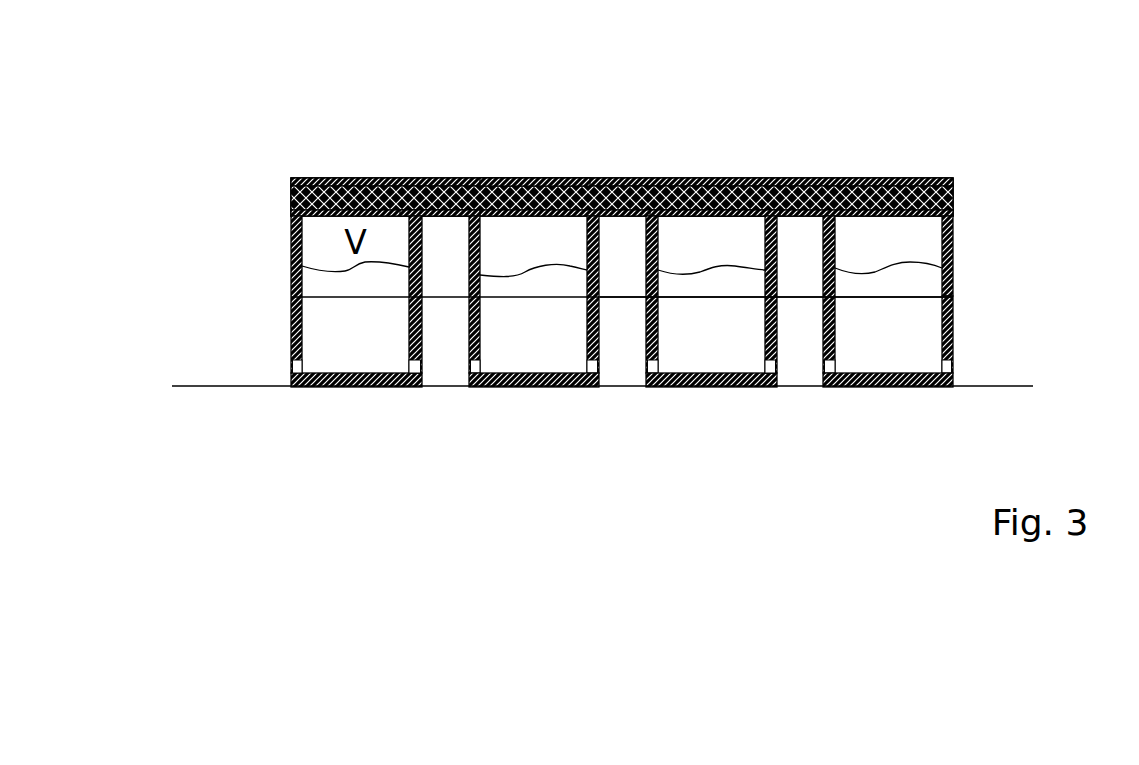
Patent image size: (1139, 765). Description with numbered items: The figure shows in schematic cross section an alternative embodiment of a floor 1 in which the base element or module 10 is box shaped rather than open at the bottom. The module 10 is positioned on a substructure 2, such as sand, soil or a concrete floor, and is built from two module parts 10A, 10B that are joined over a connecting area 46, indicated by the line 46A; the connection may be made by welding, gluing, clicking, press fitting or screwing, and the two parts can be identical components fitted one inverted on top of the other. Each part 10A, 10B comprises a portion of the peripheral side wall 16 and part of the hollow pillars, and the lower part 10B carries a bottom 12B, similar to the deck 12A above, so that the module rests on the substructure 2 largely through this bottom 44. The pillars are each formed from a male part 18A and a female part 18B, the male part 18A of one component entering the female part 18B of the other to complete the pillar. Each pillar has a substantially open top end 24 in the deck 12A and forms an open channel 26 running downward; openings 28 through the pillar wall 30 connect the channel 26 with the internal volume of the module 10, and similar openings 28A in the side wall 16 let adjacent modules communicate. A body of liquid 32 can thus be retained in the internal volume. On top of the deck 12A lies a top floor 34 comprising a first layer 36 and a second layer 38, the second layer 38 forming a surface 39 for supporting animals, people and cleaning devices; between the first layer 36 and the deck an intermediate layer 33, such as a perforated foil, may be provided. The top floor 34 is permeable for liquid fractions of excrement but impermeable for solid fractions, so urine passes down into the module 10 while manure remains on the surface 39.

The floor 1 is at (248, 140).
The substructure 2 is at (995, 387).
The module 10 is at (272, 320).
The upper module part 10A is at (958, 245).
The lower module part 10B is at (958, 342).
The deck 12A is at (705, 212).
The bottom 12B is at (687, 387).
The side wall 16 is at (291, 250).
The male pillar part 18A is at (793, 270).
The female pillar part 18B is at (452, 365).
The open top end 24 is at (439, 218).
The channel 26 is at (616, 353).
The opening 28 is at (417, 366).
The opening in side wall 28A is at (293, 370).
The pillar wall 30 is at (830, 358).
The body of liquid 32 is at (322, 330).
The intermediate layer 33 is at (953, 213).
The top floor 34 is at (272, 199).
The first layer 36 is at (953, 195).
The second layer 38 is at (952, 180).
The surface 39 is at (532, 164).
The bottom 44 is at (558, 400).
The connecting area 46 is at (957, 293).
The connection line 46A is at (291, 297).